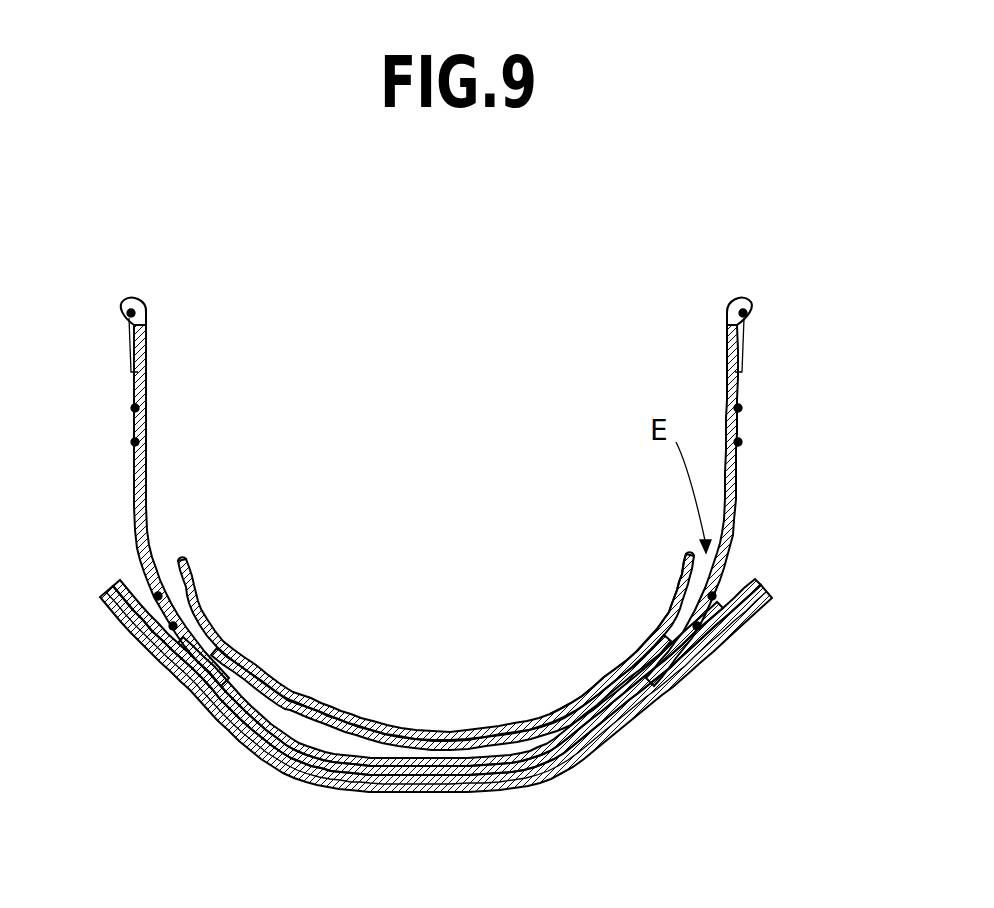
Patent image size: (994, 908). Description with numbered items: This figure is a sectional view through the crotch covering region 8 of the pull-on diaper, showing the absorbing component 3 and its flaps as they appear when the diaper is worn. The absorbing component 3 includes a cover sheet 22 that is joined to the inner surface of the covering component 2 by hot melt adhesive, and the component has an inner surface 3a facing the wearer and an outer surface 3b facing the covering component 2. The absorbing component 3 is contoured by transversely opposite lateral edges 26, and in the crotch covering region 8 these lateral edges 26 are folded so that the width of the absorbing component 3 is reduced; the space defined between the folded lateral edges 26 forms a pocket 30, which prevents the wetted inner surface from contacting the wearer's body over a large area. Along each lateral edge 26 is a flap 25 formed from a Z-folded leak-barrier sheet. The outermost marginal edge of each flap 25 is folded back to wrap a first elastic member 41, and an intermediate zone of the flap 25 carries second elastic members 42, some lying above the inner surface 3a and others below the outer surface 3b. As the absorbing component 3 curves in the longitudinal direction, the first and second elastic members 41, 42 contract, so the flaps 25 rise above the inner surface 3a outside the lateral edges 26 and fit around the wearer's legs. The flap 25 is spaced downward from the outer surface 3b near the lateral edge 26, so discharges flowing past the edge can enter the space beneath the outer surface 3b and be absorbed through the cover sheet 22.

The covering component 2 is at (117, 625).
The crotch covering region 8 is at (146, 669).
The cover sheet 22 is at (314, 710).
The absorbing component 3 is at (207, 579).
The inner surface 3a is at (275, 680).
The outer surface 3b is at (700, 569).
The flap 25 is at (738, 392).
The lateral edge 26 is at (190, 546).
The pocket 30 is at (460, 552).
The first elastic member 41 is at (750, 316).
The second elastic member 42 is at (741, 409).